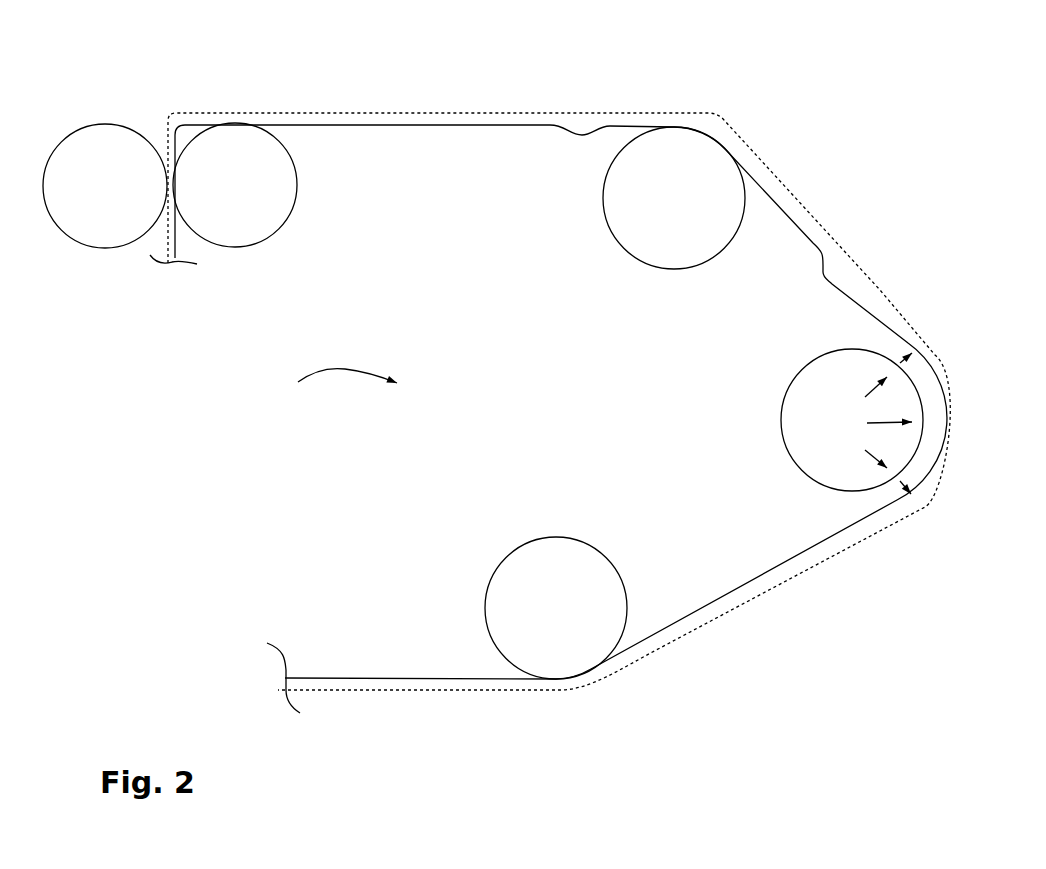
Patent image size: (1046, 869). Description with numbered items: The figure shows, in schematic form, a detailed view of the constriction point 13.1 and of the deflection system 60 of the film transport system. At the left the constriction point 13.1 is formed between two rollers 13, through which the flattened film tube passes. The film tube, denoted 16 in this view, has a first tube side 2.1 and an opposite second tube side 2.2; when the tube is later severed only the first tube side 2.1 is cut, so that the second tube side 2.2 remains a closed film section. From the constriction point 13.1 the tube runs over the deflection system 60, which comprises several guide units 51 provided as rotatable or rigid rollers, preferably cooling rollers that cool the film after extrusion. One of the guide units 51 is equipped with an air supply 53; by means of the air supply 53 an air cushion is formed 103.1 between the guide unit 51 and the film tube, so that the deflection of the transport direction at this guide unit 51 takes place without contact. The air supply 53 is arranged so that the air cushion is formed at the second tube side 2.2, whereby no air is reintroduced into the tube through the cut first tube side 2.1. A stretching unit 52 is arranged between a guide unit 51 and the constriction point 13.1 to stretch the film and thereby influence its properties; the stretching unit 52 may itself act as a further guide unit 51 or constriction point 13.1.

The constriction point 13.1 is at (170, 172).
The roller 13 is at (237, 235).
The first tube side 2.1 is at (230, 110).
The second tube side 2.2 is at (348, 127).
The multilayer web 16 is at (550, 349).
The guide unit 51 is at (663, 403).
The stretching unit 52 is at (622, 215).
The air supply 53 is at (840, 402).
The deflection system 60 is at (326, 383).
The forming of an air cushion 103.1 is at (858, 503).